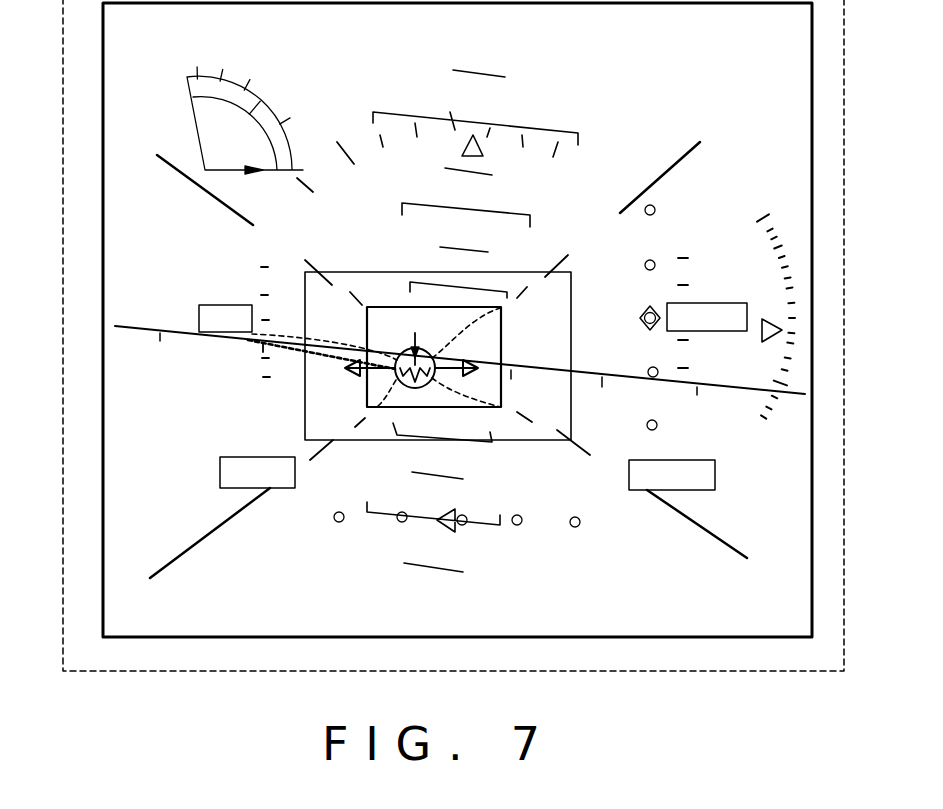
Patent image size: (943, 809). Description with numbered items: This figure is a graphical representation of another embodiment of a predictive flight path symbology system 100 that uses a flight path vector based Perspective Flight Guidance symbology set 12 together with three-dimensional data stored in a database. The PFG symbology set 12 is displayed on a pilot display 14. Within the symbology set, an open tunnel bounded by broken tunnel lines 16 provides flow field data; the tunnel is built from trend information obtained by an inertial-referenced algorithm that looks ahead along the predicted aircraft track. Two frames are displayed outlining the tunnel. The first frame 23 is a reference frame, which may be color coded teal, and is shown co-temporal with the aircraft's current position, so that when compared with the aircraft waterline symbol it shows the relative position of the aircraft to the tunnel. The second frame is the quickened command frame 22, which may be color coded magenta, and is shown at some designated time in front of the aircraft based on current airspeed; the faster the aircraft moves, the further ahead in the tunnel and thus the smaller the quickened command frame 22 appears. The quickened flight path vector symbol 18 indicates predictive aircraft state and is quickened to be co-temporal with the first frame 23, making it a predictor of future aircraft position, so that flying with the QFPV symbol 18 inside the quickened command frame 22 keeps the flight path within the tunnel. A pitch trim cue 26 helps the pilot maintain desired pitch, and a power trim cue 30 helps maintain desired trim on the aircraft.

The predictive flight path symbology system 100 is at (170, 692).
The PFG symbology set 12 is at (742, 672).
The pilot display 14 is at (100, 478).
The broken tunnel lines 16 is at (222, 203).
The quickened command frame 22 is at (390, 306).
The first frame 23 is at (571, 400).
The pitch trim cue 26 is at (472, 366).
The power trim cue 30 is at (346, 373).
The quickened flight path vector symbol 18 is at (423, 388).